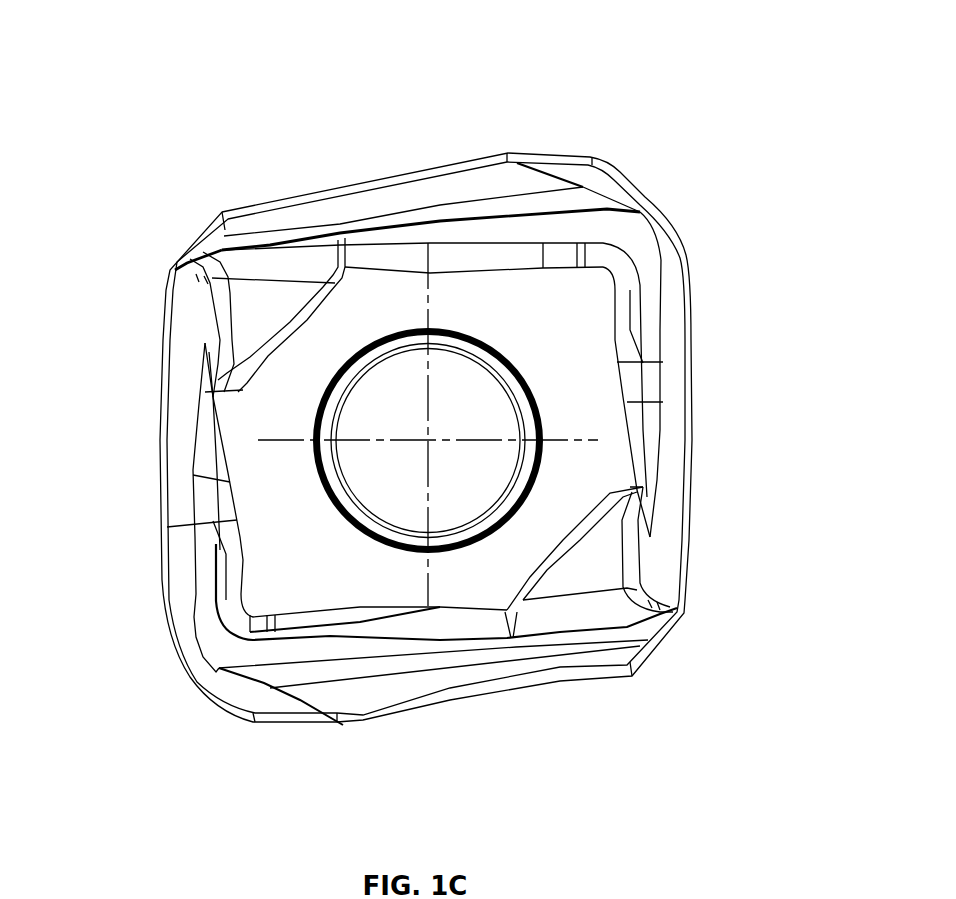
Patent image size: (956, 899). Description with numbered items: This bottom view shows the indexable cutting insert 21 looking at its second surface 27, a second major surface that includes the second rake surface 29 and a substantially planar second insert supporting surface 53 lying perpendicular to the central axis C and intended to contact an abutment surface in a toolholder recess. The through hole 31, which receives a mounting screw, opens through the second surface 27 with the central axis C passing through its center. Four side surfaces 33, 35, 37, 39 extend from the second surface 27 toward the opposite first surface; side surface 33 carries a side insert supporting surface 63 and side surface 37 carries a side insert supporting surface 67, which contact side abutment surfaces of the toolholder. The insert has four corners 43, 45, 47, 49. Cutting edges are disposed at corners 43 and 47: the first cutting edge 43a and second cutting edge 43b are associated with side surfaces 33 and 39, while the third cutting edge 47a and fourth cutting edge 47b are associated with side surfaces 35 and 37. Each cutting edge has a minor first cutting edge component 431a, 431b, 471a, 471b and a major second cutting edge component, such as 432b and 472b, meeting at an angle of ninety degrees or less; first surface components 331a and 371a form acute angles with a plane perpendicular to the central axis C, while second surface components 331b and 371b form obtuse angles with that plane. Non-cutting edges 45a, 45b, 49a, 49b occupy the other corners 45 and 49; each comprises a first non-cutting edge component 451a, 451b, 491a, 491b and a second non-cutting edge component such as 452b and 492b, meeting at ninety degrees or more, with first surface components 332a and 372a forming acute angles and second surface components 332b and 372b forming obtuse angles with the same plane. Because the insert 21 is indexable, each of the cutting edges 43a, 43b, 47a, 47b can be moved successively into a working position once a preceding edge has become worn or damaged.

The cutting insert 21 is at (207, 110).
The second surface 27 is at (387, 577).
The second rake surface 29 is at (650, 246).
The through hole 31 is at (368, 467).
The side surface 33 is at (430, 183).
The side surface 35 is at (160, 440).
The side surface 37 is at (430, 697).
The side surface 39 is at (697, 440).
The corner 43 is at (727, 133).
The corner 45 is at (115, 174).
The corner 47 is at (115, 757).
The corner 49 is at (732, 727).
The second insert supporting surface 53 is at (348, 575).
The side insert supporting surface 63 is at (388, 207).
The side insert supporting surface 67 is at (457, 688).
The first surface component 331a is at (553, 160).
The second surface component 331b is at (592, 202).
The first surface component 332a is at (233, 207).
The second surface component 332b is at (228, 257).
The first surface component 371a is at (275, 720).
The second surface component 371b is at (243, 682).
The first surface component 372a is at (605, 637).
The second surface component 372b is at (592, 645).
The first cutting edge component 431a is at (573, 157).
The first cutting edge component 431b is at (690, 273).
The second cutting edge component 432b is at (612, 210).
The first non-cutting edge component 451a is at (248, 203).
The first non-cutting edge component 451b is at (167, 293).
The second non-cutting edge component 452b is at (213, 250).
The first cutting edge component 471a is at (292, 722).
The first cutting edge component 471b is at (166, 612).
The second cutting edge component 472b is at (220, 672).
The first non-cutting edge component 491a is at (612, 641).
The first non-cutting edge component 491b is at (690, 593).
The second non-cutting edge component 492b is at (606, 641).
The first cutting edge 43a is at (597, 156).
The second cutting edge 43b is at (687, 236).
The non-cutting edge 45a is at (220, 212).
The non-cutting edge 45b is at (172, 272).
The third cutting edge 47a is at (247, 722).
The fourth cutting edge 47b is at (173, 652).
The non-cutting edge 49a is at (634, 676).
The non-cutting edge 49b is at (685, 616).
The central axis C is at (430, 440).